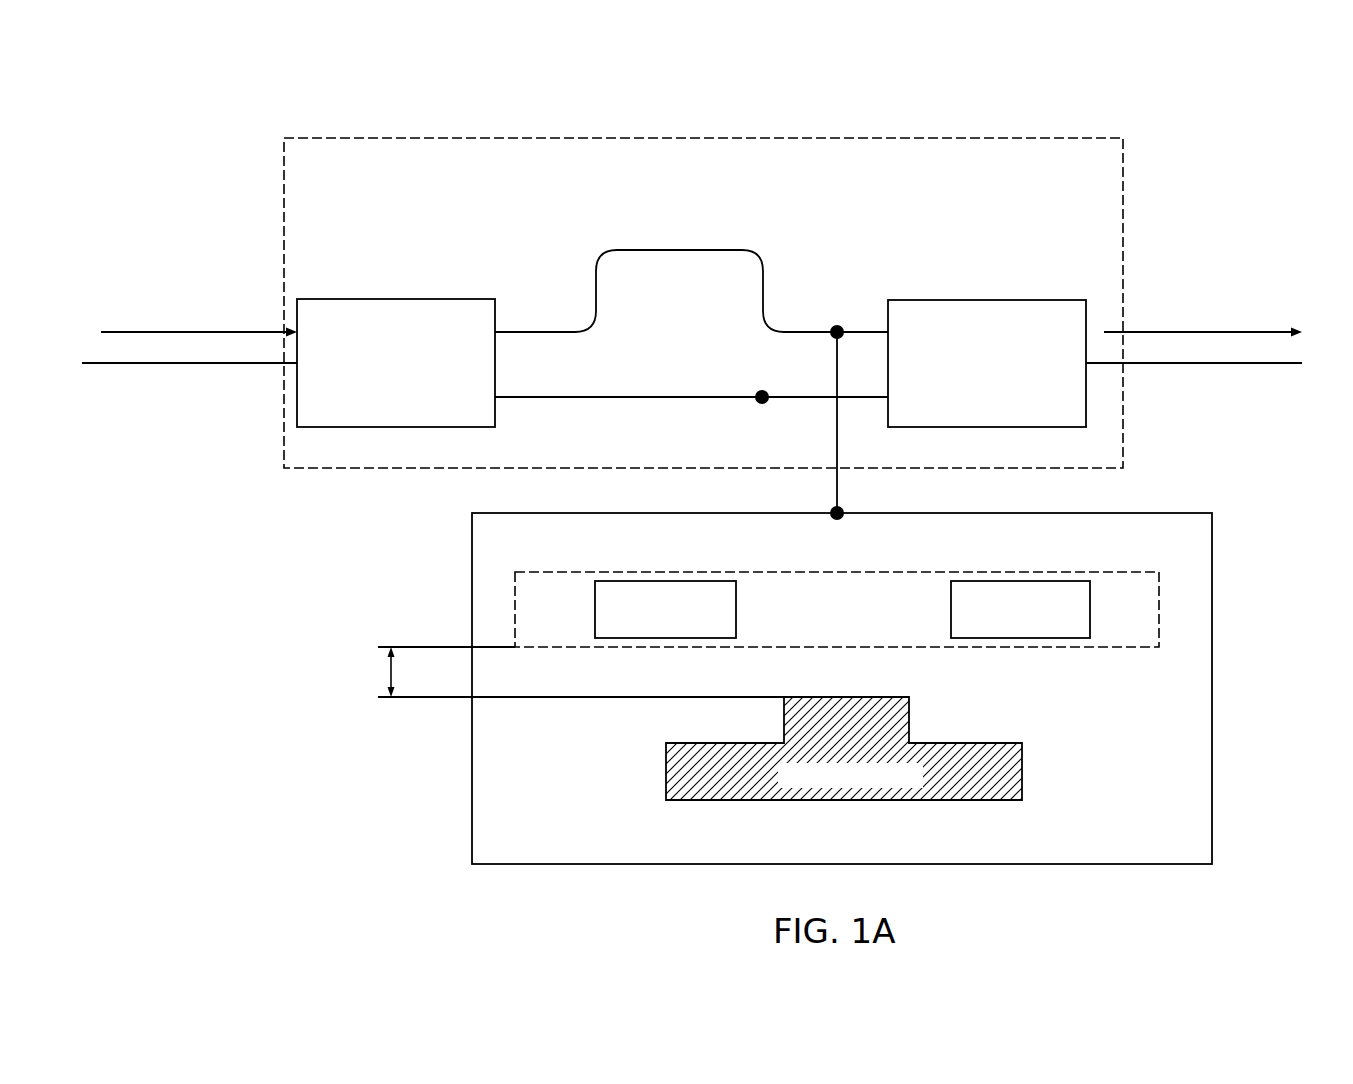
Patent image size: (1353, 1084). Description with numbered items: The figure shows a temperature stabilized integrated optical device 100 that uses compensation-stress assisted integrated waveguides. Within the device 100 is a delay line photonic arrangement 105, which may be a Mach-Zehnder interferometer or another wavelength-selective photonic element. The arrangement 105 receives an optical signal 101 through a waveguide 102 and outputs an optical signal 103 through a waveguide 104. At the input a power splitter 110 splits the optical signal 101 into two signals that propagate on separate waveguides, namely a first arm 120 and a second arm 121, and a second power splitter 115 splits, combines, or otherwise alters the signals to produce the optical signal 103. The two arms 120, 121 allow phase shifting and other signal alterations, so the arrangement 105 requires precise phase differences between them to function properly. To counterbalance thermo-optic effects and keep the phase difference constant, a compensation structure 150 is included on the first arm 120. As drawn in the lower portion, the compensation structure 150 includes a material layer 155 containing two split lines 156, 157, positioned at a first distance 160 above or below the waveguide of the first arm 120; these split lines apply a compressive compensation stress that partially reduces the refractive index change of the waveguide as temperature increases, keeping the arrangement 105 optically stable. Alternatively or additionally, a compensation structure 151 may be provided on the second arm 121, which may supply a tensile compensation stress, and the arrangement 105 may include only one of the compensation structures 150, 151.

The device 100 is at (1172, 100).
The optical signal 101 is at (205, 330).
The waveguide 102 is at (170, 365).
The optical signal 103 is at (1185, 332).
The waveguide 104 is at (1182, 363).
The arrangement 105 is at (910, 138).
The power splitter 110 is at (353, 299).
The power splitter 115 is at (945, 300).
The first arm 120 is at (605, 255).
The second arm 121 is at (633, 400).
The compensation structure 150 is at (837, 326).
The compensation structure 151 is at (760, 390).
The material layer 155 is at (997, 572).
The split line 156 is at (637, 625).
The split line 157 is at (995, 625).
The first distance 160 is at (392, 672).